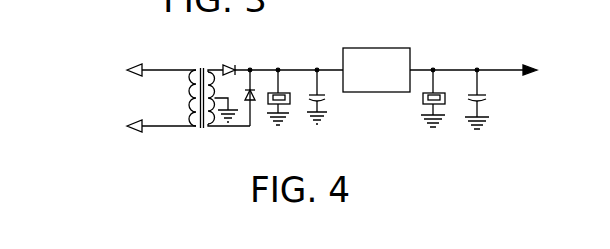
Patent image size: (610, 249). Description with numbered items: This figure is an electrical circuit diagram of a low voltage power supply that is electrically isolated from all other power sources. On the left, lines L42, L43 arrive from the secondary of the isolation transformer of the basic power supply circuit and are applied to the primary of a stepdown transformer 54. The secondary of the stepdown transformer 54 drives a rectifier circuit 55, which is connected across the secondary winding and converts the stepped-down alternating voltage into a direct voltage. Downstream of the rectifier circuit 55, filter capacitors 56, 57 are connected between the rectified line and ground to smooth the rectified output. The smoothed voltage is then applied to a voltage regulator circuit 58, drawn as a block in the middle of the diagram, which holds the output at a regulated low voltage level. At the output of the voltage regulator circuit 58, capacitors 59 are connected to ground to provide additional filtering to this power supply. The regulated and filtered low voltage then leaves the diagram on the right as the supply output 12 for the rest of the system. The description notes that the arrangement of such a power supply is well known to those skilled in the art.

The line L42 is at (148, 42).
The line L43 is at (128, 130).
The stepdown transformer 54 is at (197, 128).
The rectifier circuit 55 is at (250, 69).
The filter capacitor 56 is at (279, 91).
The filter capacitor 57 is at (311, 87).
The voltage regulator circuit 58 is at (366, 48).
The capacitors 59 is at (478, 82).
The regulated DC output 12 is at (545, 43).